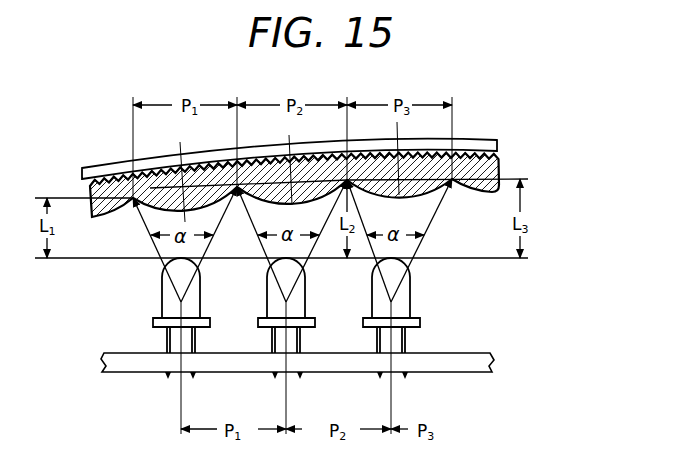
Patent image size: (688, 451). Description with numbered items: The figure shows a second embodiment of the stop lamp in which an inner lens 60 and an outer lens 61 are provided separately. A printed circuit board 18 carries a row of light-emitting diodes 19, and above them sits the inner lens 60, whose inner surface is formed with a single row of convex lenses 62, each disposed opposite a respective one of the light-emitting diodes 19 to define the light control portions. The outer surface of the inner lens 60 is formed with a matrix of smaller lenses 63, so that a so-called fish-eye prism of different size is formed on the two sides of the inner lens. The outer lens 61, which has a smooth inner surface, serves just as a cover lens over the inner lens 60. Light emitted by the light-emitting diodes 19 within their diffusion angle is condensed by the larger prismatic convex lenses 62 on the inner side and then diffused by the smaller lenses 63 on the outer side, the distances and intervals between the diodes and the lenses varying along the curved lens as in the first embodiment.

The printed circuit board 18 is at (477, 366).
The light-emitting diodes 19 is at (200, 305).
The inner lens 60 is at (343, 171).
The outer lens 61 is at (113, 169).
The convex lenses 62 is at (205, 162).
The smaller lenses 63 is at (255, 167).